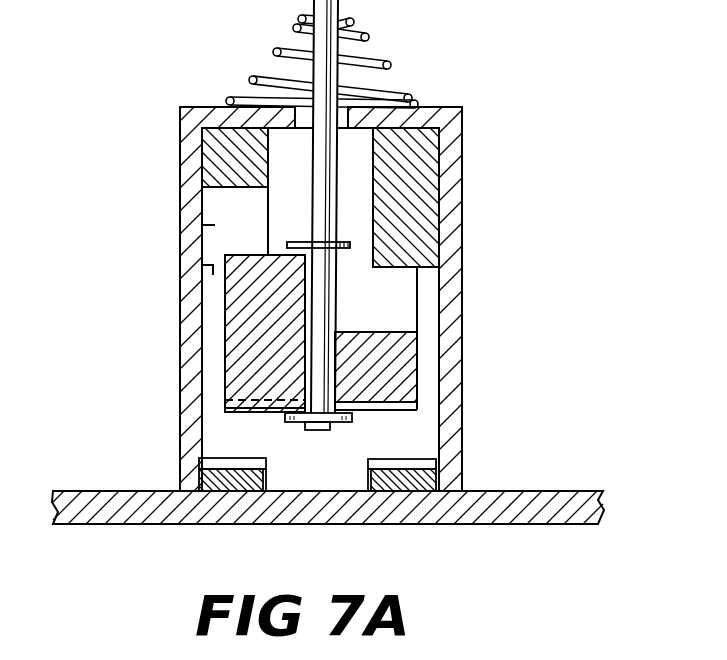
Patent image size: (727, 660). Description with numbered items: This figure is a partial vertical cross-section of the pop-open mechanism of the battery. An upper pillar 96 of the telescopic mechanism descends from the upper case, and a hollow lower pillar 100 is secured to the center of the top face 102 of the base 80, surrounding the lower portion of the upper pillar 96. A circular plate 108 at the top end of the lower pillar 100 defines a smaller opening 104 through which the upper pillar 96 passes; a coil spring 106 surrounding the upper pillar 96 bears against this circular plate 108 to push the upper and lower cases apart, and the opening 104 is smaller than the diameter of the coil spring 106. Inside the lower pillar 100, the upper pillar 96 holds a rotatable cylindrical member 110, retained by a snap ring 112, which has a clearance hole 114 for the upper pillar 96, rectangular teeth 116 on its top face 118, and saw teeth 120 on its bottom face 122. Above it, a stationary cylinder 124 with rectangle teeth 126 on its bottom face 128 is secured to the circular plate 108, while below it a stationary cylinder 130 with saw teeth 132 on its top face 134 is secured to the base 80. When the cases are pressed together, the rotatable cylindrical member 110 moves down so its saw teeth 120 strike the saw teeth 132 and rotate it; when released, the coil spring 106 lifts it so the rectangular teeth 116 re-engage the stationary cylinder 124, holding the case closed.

The base 80 is at (500, 512).
The upper pillar 96 is at (356, 206).
The lower pillar 100 is at (450, 272).
The top face 102 is at (93, 486).
The opening 104 is at (303, 104).
The coil spring 106 is at (386, 64).
The circular plate 108 is at (428, 117).
The rotatable cylindrical member 110 is at (232, 318).
The snap ring 112 is at (292, 242).
The clearance hole 114 is at (337, 284).
The rectangular teeth 116 is at (233, 372).
The top face 118 is at (365, 242).
The saw teeth 120 is at (283, 415).
The bottom face 122 is at (230, 414).
The stationary cylinder 124 is at (208, 143).
The rectangle teeth 126 is at (215, 226).
The bottom face 128 is at (182, 278).
The stationary cylinder 130 is at (243, 482).
The saw teeth 132 is at (268, 462).
The top face 134 is at (218, 452).